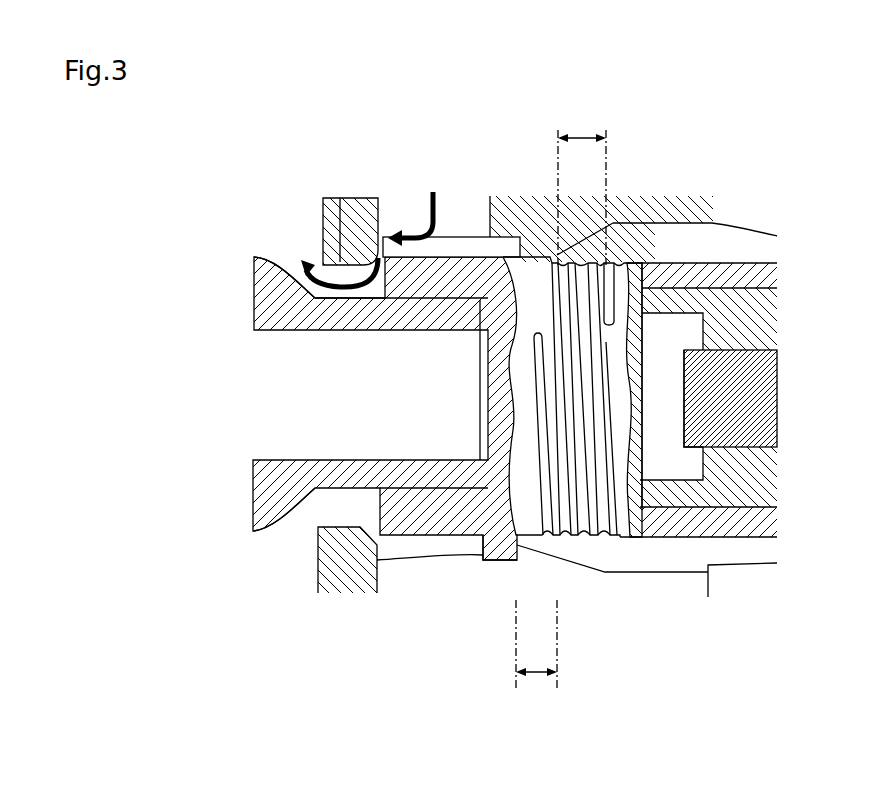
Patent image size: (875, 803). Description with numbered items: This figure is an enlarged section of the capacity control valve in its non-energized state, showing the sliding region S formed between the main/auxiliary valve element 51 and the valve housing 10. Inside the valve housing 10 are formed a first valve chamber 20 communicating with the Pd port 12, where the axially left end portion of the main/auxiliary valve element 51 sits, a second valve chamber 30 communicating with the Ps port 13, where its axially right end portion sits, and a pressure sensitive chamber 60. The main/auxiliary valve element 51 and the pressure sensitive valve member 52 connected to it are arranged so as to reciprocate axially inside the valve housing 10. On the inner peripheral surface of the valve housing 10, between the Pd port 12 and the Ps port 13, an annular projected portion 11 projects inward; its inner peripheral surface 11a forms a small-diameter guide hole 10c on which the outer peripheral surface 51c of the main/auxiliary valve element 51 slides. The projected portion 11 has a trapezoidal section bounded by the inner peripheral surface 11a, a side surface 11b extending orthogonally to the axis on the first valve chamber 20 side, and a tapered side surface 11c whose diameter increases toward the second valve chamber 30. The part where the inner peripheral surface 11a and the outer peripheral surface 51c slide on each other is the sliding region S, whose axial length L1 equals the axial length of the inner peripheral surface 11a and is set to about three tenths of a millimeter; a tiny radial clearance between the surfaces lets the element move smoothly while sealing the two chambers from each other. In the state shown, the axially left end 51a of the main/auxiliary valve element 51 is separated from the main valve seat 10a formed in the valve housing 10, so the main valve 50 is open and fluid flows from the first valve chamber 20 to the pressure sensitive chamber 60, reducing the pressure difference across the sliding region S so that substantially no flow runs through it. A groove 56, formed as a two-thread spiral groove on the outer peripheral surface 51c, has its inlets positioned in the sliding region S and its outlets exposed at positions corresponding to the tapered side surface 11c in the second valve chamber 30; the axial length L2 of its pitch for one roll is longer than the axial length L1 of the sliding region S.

The valve housing 10 is at (322, 229).
The main valve seat 10a is at (339, 198).
The guide hole 10c is at (602, 489).
The projected portion 11 is at (512, 546).
The inner peripheral surface 11a is at (556, 540).
The side surface 11b is at (490, 562).
The tapered side surface 11c is at (597, 540).
The Pd port 12 is at (472, 252).
The Ps port 13 is at (712, 223).
The first valve chamber 20 is at (457, 238).
The second valve chamber 30 is at (655, 245).
The main valve 50 is at (284, 104).
The main/auxiliary valve element 51 is at (767, 545).
The axially left end 51a is at (392, 228).
The outer peripheral surface 51c is at (640, 572).
The pressure sensitive valve member 52 is at (283, 518).
The groove 56 is at (593, 347).
The pressure sensitive chamber 60 is at (289, 262).
The sliding region S is at (480, 460).
The axial length of the sliding region L1 is at (536, 657).
The axial length of a pitch for one roll L2 is at (582, 185).